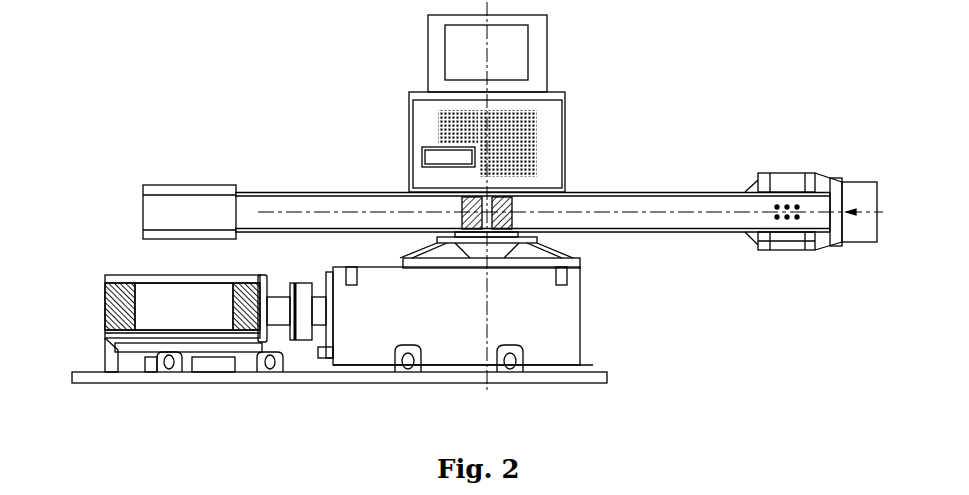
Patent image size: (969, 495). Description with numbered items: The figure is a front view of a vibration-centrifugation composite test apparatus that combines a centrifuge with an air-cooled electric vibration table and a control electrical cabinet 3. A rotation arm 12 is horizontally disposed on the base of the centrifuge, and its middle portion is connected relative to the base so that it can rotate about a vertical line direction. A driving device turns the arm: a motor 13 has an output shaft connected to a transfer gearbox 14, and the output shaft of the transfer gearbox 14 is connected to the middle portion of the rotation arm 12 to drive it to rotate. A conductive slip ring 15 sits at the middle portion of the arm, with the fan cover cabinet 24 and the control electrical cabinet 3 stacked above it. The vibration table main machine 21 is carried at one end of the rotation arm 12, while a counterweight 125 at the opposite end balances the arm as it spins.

The control electrical cabinet 3 is at (547, 47).
The fan cover cabinet 24 is at (565, 115).
The conductive slip ring 15 is at (520, 197).
The rotation arm 12 is at (693, 200).
The vibration table main machine 21 is at (848, 188).
The counterweight 125 is at (183, 187).
The motor 13 is at (150, 305).
The transfer gearbox 14 is at (370, 325).